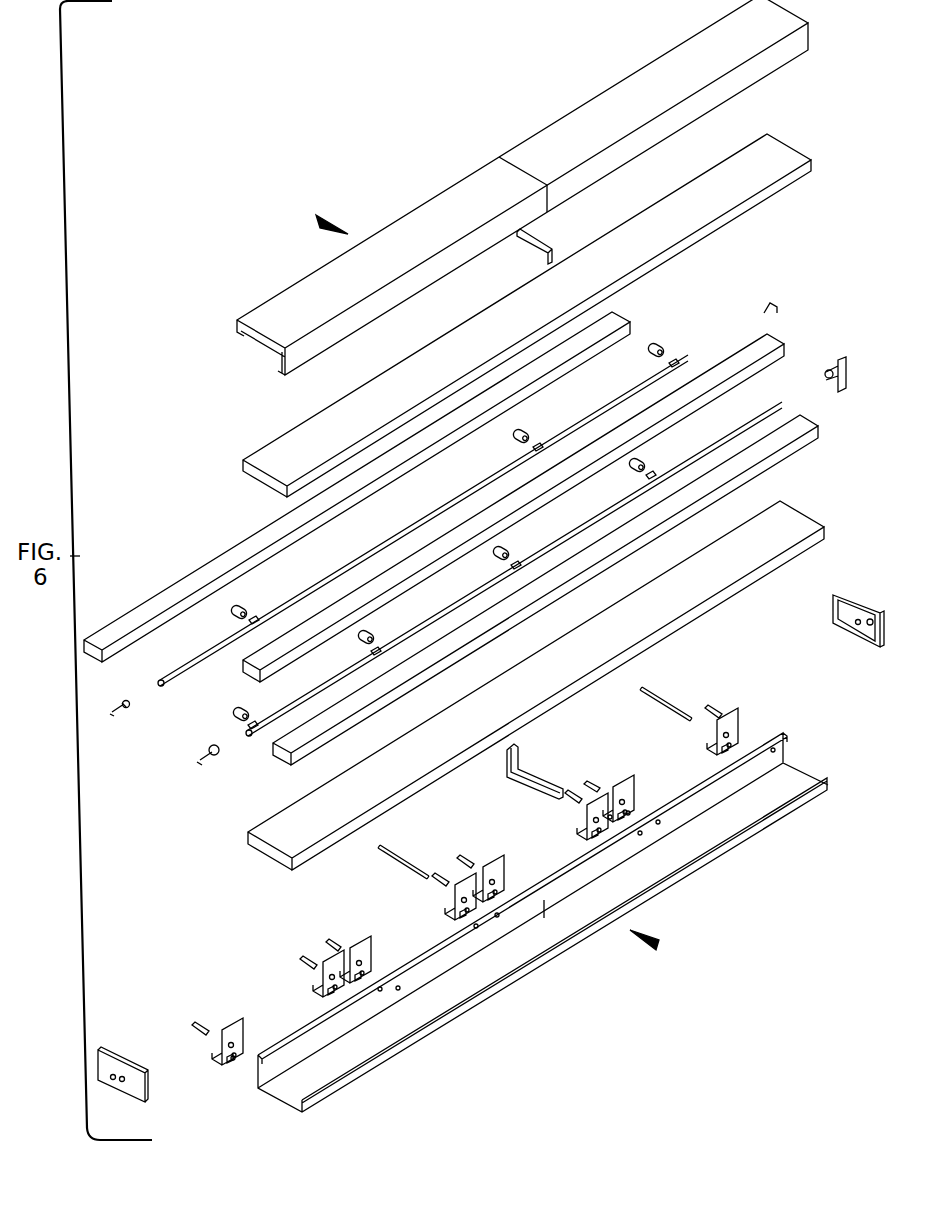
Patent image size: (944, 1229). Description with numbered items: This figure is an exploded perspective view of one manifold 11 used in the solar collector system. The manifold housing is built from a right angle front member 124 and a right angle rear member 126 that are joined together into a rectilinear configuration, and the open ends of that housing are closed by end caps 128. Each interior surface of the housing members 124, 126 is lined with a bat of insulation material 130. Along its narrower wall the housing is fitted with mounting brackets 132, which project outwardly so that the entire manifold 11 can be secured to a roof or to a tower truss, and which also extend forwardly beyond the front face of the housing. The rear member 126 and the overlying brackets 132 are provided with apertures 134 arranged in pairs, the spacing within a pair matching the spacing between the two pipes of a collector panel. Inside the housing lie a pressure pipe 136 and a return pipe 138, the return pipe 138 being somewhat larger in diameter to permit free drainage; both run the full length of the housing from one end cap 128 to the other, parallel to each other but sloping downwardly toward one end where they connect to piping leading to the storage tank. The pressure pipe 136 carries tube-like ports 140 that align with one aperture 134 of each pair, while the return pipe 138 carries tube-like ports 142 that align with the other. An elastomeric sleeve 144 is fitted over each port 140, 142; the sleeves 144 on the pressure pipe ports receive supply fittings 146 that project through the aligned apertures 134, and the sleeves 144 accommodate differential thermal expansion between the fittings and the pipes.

The manifold 11 is at (325, 222).
The right angle front member 124 is at (345, 1072).
The right angle rear member 126 is at (439, 208).
The end cap 128 is at (862, 603).
The bat of insulation material 130 is at (303, 437).
The mounting bracket 132 is at (240, 1034).
The aperture 134 is at (233, 1060).
The pressure pipe 136 is at (188, 657).
The return pipe 138 is at (260, 737).
The tube-like port 140 is at (658, 365).
The tube-like port 142 is at (520, 560).
The elastomeric sleeve 144 is at (662, 344).
The supply fitting 146 is at (713, 708).